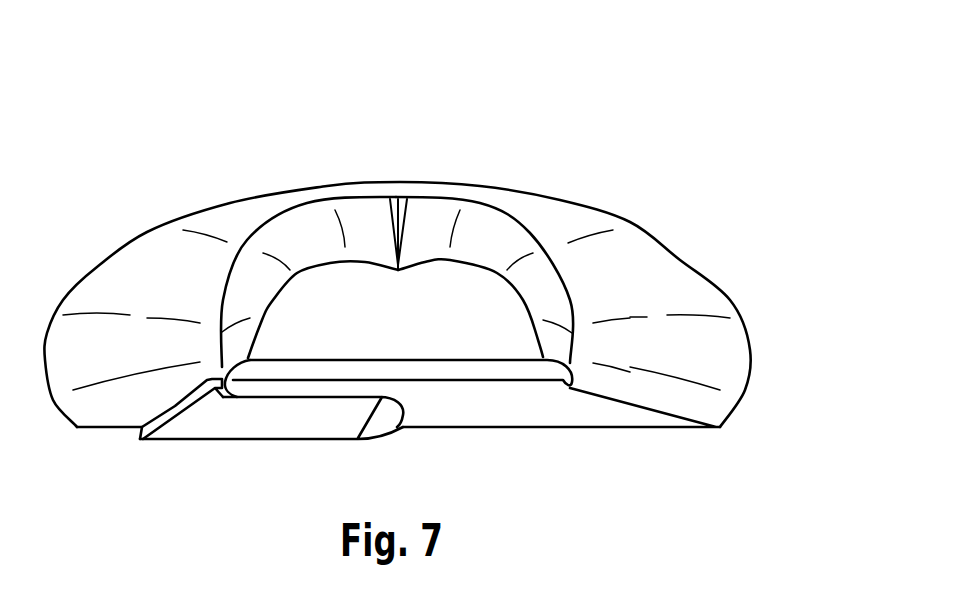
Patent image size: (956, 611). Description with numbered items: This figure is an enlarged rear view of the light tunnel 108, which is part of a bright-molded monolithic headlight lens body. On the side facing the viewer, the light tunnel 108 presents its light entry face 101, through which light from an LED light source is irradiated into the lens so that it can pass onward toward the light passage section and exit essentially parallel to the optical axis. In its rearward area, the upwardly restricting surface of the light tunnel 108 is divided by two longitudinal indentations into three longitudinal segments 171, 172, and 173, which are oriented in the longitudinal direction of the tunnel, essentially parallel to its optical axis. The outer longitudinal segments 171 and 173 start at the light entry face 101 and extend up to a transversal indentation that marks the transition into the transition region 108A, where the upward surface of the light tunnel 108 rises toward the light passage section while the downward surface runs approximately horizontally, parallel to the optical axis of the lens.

The light tunnel 108 is at (275, 450).
The transition region 108A is at (162, 267).
The longitudinal segment 171 is at (475, 215).
The longitudinal segment 172 is at (398, 210).
The longitudinal segment 173 is at (310, 227).
The light entry face 101 is at (475, 337).